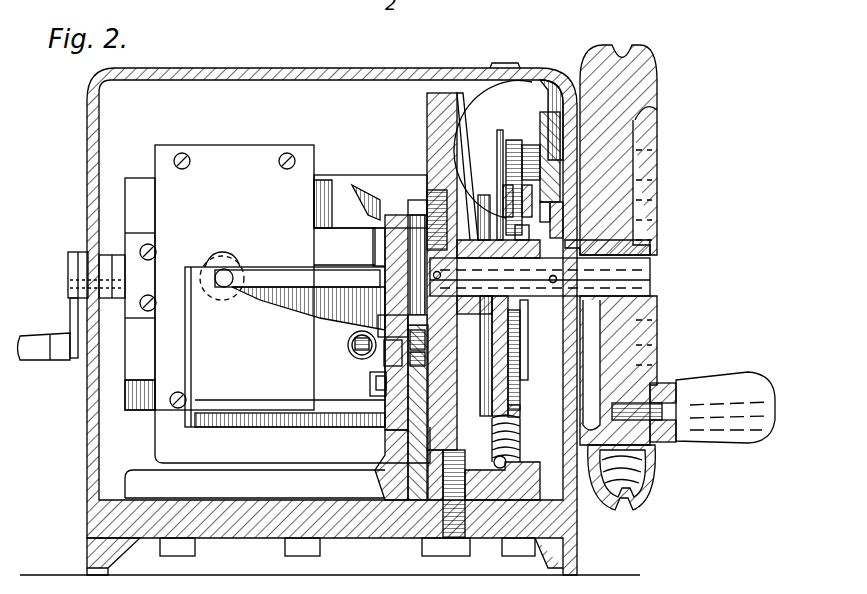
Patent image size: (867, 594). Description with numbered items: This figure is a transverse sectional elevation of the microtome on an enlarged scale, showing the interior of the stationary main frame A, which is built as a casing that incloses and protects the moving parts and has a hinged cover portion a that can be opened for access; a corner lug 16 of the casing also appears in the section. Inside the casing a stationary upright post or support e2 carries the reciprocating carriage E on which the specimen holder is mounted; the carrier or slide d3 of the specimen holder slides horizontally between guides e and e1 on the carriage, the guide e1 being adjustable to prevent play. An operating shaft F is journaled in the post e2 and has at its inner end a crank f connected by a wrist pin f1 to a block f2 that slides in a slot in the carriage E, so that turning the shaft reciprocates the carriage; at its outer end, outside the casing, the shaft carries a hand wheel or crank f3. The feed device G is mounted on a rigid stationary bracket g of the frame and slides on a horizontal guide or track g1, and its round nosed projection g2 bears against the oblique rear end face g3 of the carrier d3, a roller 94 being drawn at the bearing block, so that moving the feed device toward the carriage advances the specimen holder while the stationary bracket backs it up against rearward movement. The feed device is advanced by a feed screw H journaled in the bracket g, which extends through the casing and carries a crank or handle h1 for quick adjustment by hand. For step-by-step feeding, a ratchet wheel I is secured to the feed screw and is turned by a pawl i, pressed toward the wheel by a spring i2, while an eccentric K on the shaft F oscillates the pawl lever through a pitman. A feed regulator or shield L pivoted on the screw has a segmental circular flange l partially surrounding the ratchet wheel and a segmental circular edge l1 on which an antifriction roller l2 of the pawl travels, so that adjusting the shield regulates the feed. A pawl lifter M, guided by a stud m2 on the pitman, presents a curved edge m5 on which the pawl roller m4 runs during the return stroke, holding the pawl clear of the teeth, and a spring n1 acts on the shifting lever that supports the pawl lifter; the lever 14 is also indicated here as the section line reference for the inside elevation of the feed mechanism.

The stationary main frame A is at (312, 321).
The hinged cover portion a is at (302, 67).
The hand wheel or crank f3 is at (634, 173).
The casing corner lug 16 is at (553, 100).
The operating shaft F is at (540, 268).
The feed device G is at (234, 277).
The bracket g is at (155, 294).
The guide or track g1 is at (360, 176).
The round nosed projection g2 is at (222, 255).
The oblique rear end face g3 is at (277, 332).
The roller 94 is at (350, 352).
The feed screw H is at (123, 258).
The crank or handle h1 is at (70, 330).
The guide e is at (384, 448).
The adjustable guide e1 is at (386, 250).
The upright post or support e2 is at (430, 153).
The reciprocating carriage E is at (407, 468).
The crank f is at (440, 332).
The wrist pin f1 is at (440, 370).
The block f2 is at (392, 322).
The carrier or slide d3 is at (364, 384).
The lever 14 is at (490, 145).
The pawl lifter M is at (503, 135).
The segmental circular flange l is at (516, 130).
The feed regulator or shield L is at (540, 142).
The stud or projection m2 is at (518, 162).
The antifriction roller m4 is at (500, 170).
The curved edge m5 is at (490, 148).
The antifriction roller l2 is at (548, 210).
The pawl i is at (528, 250).
The spring i2 is at (552, 277).
The ratchet wheel I is at (522, 386).
The segmental circular edge l1 is at (524, 356).
The eccentric K is at (520, 410).
The spring n1 is at (521, 440).